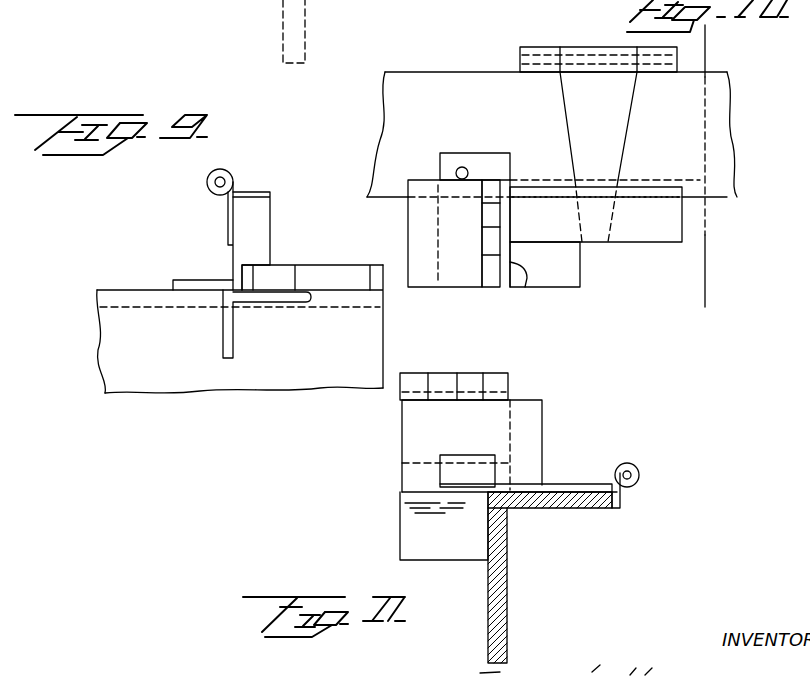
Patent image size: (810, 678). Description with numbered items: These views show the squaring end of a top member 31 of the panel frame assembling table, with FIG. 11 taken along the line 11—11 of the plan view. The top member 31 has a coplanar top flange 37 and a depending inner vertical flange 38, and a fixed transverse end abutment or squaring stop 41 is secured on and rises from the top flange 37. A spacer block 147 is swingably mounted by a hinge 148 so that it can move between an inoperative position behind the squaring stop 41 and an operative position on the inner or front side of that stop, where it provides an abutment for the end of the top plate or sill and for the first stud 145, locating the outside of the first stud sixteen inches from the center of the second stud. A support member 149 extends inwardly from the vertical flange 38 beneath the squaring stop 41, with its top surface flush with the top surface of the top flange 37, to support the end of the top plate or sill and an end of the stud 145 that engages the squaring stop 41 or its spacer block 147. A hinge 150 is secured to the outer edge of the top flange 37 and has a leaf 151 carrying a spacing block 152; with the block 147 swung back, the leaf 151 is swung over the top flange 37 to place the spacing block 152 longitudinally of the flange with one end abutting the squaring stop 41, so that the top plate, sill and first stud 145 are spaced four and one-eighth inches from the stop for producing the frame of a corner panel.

In FIG. 10, the section line 11— 11 is at (712, 44).
In FIG. 9, the top member 31 is at (316, 395).
In FIG. 10, the top member 31 is at (746, 142).
In FIG. 11, the top member 31 is at (535, 559).
In FIG. 10, the top flange 37 is at (400, 80).
In FIG. 11, the top flange 37 is at (582, 508).
In FIG. 9, the vertical flange 38 is at (190, 380).
In FIG. 11, the vertical flange 38 is at (507, 630).
In FIG. 9, the end abutment 41 is at (245, 247).
In FIG. 10, the end abutment 41 is at (525, 287).
In FIG. 11, the end abutment 41 is at (533, 442).
In FIG. 9, the stud 145 is at (305, 30).
In FIG. 9, the spacer block 147 is at (260, 223).
In FIG. 10, the spacer block 147 is at (427, 277).
In FIG. 9, the hinge 148 is at (235, 178).
In FIG. 10, the hinge 148 is at (490, 185).
In FIG. 11, the hinge 148 is at (502, 385).
In FIG. 9, the support member 149 is at (278, 293).
In FIG. 10, the support member 149 is at (563, 285).
In FIG. 11, the support member 149 is at (400, 493).
In FIG. 9, the hinge 150 is at (320, 273).
In FIG. 10, the hinge 150 is at (543, 53).
In FIG. 11, the hinge 150 is at (640, 473).
In FIG. 10, the leaf 151 is at (627, 147).
In FIG. 11, the leaf 151 is at (563, 483).
In FIG. 10, the spacing block 152 is at (660, 230).
In FIG. 11, the spacing block 152 is at (478, 437).